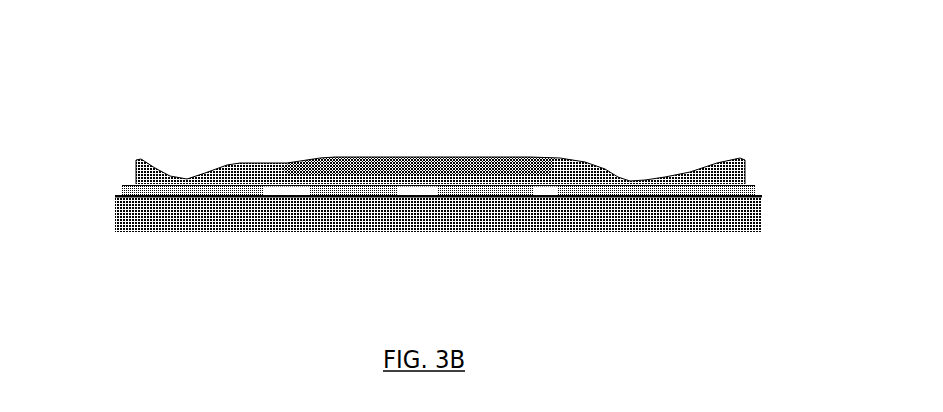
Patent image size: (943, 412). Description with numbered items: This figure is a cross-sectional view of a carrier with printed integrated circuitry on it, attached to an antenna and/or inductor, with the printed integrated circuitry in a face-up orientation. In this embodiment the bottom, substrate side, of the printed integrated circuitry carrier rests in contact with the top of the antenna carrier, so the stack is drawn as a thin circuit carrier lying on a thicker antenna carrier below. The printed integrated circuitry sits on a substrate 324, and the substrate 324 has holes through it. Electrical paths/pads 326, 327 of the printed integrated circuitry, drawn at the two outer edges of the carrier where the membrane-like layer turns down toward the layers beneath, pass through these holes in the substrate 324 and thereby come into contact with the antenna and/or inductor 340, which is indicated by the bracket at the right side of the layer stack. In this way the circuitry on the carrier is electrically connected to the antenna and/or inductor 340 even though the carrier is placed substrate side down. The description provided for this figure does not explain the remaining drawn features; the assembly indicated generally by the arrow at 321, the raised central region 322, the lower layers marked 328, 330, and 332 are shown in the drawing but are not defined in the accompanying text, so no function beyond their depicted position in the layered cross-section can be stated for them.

The lens assembly 321 is at (205, 84).
The lens dome 322 is at (367, 157).
The substrate 324 is at (518, 157).
The electrical path/pad 326 is at (617, 177).
The electrical path/pad 327 is at (221, 167).
The substrate 328 is at (228, 232).
The electrode layer 330 is at (473, 197).
The bonding layer 332 is at (642, 195).
The antenna and/or inductor 340 is at (776, 185).